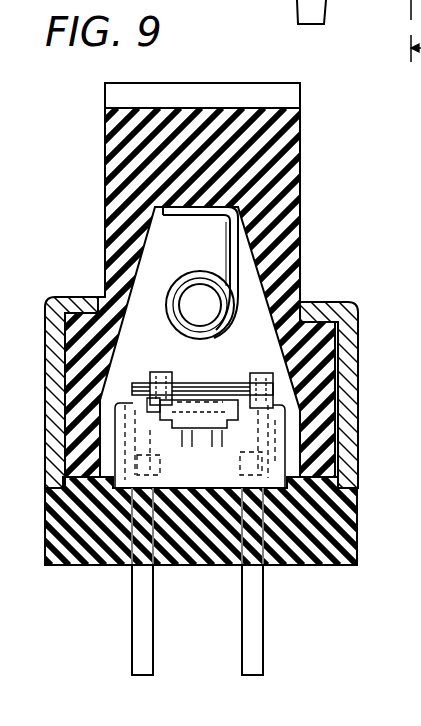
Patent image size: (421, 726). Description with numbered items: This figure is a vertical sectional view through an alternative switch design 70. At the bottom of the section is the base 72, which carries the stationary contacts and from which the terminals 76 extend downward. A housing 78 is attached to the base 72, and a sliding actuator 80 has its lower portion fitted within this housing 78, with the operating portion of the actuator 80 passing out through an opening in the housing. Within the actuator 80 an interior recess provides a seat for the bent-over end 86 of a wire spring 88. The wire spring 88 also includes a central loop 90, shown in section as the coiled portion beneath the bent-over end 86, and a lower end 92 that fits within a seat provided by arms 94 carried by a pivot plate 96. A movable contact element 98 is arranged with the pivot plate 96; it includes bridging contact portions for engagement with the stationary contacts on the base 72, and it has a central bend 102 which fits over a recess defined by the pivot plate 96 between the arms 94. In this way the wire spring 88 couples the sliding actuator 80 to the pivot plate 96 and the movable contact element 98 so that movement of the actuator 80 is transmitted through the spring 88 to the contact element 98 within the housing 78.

The switch design 70 is at (330, 274).
The base 72 is at (82, 570).
The terminals 76 is at (250, 647).
The housing 78 is at (45, 327).
The sliding actuator 80 is at (120, 172).
The bent-over end 86 is at (190, 217).
The wire spring 88 is at (232, 257).
The central loop 90 is at (176, 311).
The lower end 92 is at (212, 382).
The arms 94 is at (258, 393).
The pivot plate 96 is at (273, 440).
The movable contact element 98 is at (215, 430).
The central bend 102 is at (197, 400).